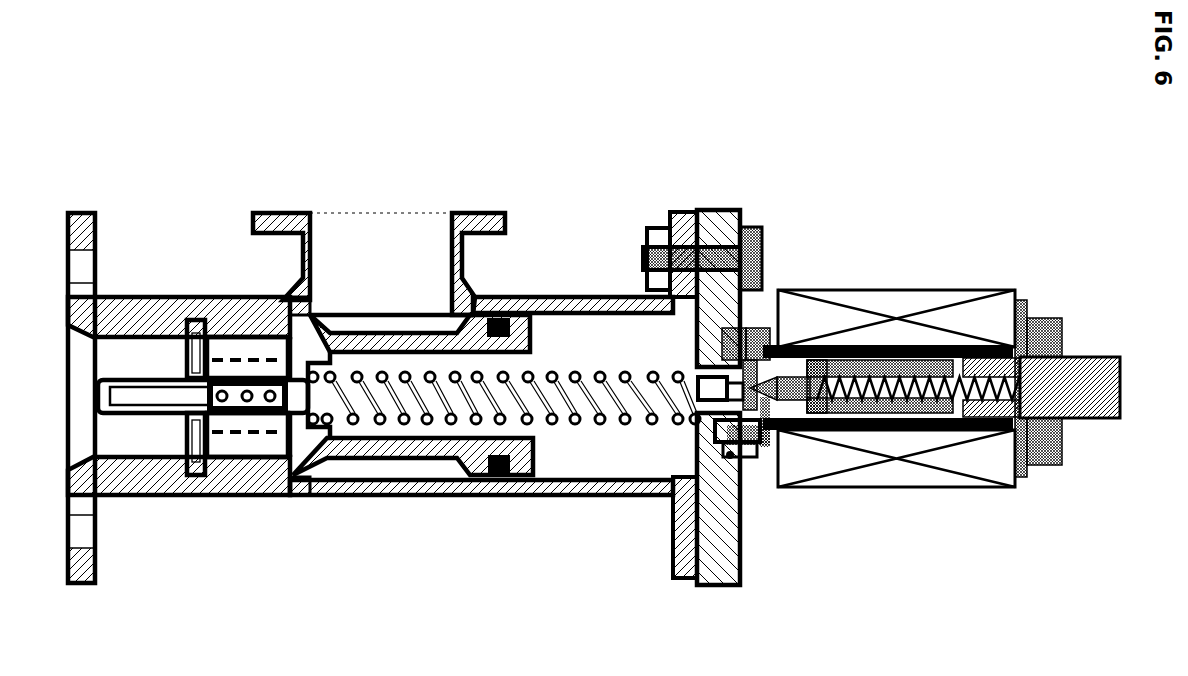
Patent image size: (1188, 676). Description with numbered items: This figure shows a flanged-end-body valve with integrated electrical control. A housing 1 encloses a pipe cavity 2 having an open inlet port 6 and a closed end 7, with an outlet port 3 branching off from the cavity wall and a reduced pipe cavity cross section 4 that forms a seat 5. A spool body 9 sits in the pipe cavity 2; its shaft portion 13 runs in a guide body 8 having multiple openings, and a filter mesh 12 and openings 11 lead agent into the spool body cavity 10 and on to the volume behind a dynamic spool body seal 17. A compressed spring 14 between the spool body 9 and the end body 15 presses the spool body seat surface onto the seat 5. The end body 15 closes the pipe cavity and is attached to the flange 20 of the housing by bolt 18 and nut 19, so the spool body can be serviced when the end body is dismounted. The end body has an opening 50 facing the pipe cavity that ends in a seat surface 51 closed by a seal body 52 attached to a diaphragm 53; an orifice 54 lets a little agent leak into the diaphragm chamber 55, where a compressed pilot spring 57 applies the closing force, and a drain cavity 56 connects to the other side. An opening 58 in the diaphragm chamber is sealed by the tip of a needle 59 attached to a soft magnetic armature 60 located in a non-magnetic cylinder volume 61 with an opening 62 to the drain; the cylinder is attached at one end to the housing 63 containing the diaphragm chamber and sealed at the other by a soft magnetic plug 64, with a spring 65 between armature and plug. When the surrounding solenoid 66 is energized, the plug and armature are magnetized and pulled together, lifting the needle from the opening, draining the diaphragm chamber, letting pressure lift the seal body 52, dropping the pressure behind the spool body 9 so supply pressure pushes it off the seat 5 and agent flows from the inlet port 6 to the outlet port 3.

The housing 1 is at (262, 478).
The pipe cavity 2 is at (588, 465).
The outlet port 3 is at (380, 302).
The reduced pipe cavity cross section 4 is at (255, 323).
The seat 5 is at (283, 298).
The inlet port 6 is at (88, 428).
The closed end 7 is at (665, 447).
The guide body 8 is at (184, 445).
The spool body 9 is at (427, 450).
The spool body cavity 10 is at (343, 432).
The openings 11 is at (245, 417).
The filter mesh 12 is at (227, 357).
The shaft portion 13 is at (122, 413).
The spring 14 is at (552, 425).
The end body 15 is at (727, 227).
The spool body seal 17 is at (498, 478).
The bolt 18 is at (667, 228).
The nut 19 is at (648, 241).
The flange 20 is at (473, 220).
The opening 50 is at (707, 388).
The seat surface 51 is at (735, 340).
The seal body 52 is at (748, 342).
The diaphragm 53 is at (748, 290).
The orifice 54 is at (765, 345).
The diaphragm chamber 55 is at (785, 348).
The drain cavity 56 is at (728, 448).
The pilot spring 57 is at (743, 450).
The opening 58 is at (762, 448).
The needle 59 is at (777, 430).
The armature 60 is at (812, 362).
The cylinder volume 61 is at (885, 347).
The opening 62 is at (733, 460).
The housing 63 is at (757, 460).
The plug 64 is at (1083, 362).
The spring 65 is at (960, 377).
The solenoid 66 is at (922, 473).